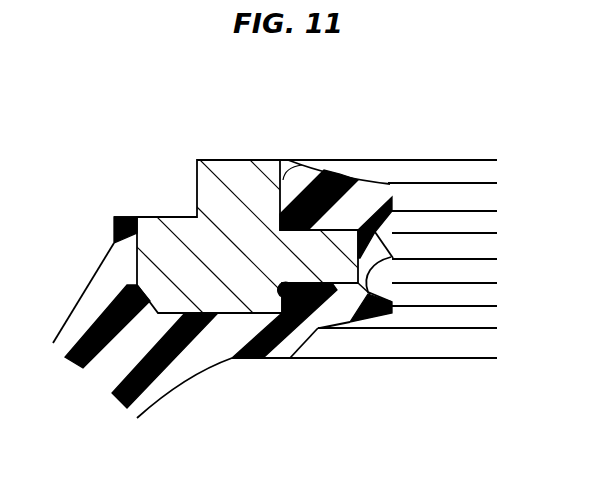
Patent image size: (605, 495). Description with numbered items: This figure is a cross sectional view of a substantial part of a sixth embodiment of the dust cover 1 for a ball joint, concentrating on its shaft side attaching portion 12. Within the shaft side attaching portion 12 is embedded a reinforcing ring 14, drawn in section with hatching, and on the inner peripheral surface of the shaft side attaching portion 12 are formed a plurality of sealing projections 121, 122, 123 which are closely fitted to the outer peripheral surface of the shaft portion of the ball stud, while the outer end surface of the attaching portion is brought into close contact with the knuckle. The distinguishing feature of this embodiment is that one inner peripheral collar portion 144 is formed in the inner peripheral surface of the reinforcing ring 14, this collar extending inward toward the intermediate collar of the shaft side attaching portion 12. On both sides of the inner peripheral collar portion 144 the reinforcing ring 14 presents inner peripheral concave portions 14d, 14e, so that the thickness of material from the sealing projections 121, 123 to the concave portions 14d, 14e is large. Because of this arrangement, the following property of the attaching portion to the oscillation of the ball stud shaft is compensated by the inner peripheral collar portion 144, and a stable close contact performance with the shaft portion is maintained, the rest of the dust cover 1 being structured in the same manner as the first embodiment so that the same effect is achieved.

The dust cover 1 is at (73, 270).
The shaft side attaching portion 12 is at (235, 377).
The reinforcing ring 14 is at (232, 168).
The inner peripheral concave portion 14d is at (302, 162).
The inner peripheral concave portion 14e is at (315, 362).
The sealing projection 121 is at (386, 190).
The sealing projection 122 is at (392, 257).
The sealing projection 123 is at (392, 316).
The inner peripheral collar portion 144 is at (323, 255).